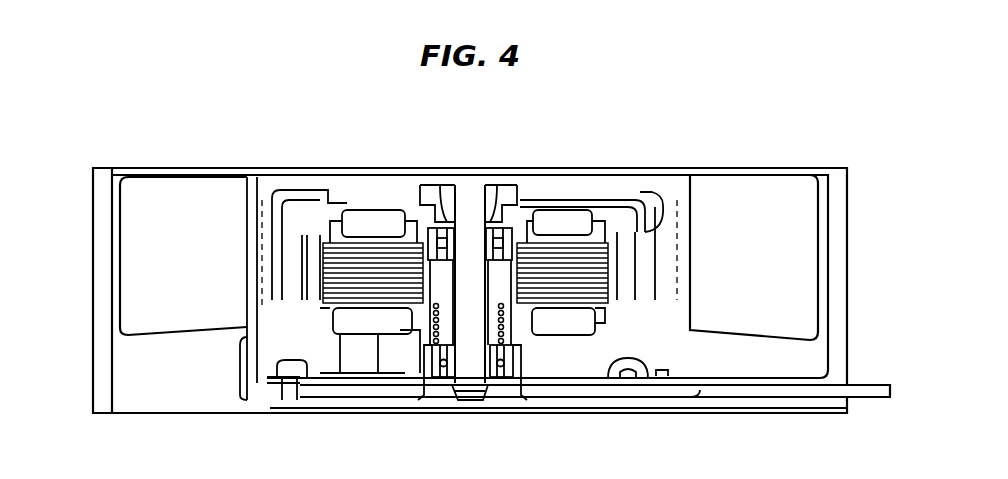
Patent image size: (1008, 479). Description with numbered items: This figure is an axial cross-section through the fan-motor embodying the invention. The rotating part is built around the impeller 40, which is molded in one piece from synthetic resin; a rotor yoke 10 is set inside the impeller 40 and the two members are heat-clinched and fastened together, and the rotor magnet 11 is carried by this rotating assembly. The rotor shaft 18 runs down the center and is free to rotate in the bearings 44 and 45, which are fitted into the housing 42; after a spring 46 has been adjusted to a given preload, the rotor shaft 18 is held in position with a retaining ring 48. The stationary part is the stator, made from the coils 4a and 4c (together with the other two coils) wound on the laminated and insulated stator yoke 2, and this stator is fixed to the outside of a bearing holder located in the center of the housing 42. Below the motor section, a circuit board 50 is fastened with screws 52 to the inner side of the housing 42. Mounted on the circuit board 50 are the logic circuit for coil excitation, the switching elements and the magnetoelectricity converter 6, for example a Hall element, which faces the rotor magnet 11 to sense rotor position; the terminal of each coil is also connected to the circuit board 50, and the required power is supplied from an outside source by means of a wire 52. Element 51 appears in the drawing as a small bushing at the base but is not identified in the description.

The stator yoke 2 is at (327, 268).
The coil 4a is at (570, 217).
The coil 4c is at (359, 215).
The magnetoelectricity converter 6 is at (330, 325).
The rotor yoke 10 is at (307, 183).
The rotor magnet 11 is at (645, 247).
The rotor shaft 18 is at (467, 190).
The impeller 40 is at (255, 168).
The housing 42 is at (840, 312).
The bearing 44 is at (428, 222).
The bearing 45 is at (444, 372).
The spring 46 is at (430, 335).
The retaining ring 48 is at (476, 395).
The circuit board 50 is at (604, 368).
The bushing 51 is at (292, 380).
The screw 52 is at (790, 397).